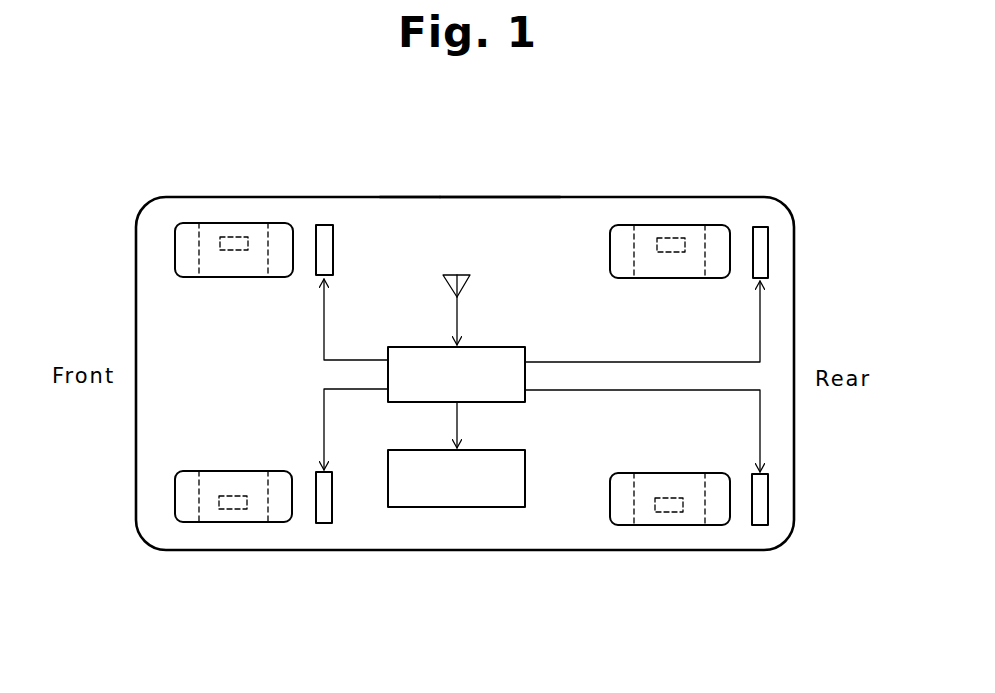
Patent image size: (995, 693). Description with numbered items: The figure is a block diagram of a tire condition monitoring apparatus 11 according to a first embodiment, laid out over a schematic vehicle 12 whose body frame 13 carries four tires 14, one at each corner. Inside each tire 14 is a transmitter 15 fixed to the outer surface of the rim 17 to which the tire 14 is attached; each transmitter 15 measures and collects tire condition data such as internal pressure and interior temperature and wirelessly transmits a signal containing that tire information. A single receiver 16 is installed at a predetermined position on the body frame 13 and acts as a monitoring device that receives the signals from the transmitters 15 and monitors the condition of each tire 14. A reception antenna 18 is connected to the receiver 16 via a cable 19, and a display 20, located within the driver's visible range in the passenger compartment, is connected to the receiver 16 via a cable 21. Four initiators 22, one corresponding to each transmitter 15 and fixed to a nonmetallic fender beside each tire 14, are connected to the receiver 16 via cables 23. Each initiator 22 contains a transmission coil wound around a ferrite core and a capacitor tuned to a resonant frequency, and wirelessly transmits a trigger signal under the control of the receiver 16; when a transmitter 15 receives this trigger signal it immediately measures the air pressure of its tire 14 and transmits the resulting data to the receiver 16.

The tire condition monitoring apparatus 11 is at (792, 171).
The vehicle 12 is at (492, 197).
The body frame 13 is at (423, 197).
The tire 14 is at (282, 240).
The transmitter 15 is at (236, 222).
The receiver 16 is at (500, 347).
The rim 17 is at (195, 243).
The reception antenna 18 is at (470, 276).
The cable 19 is at (457, 312).
The display 20 is at (526, 480).
The cable 21 is at (458, 415).
The initiator 22 is at (333, 238).
The cable 23 is at (322, 322).